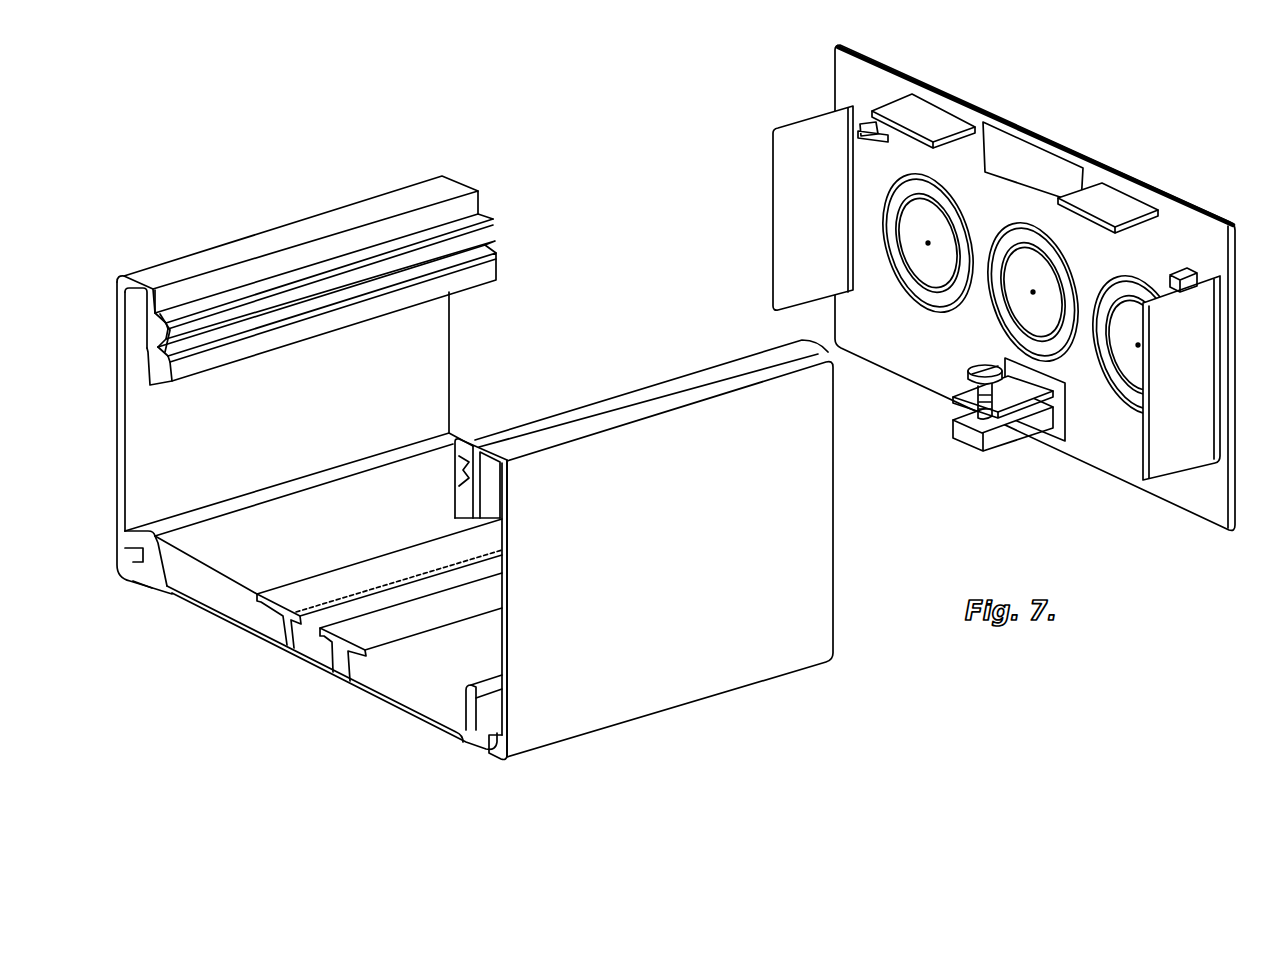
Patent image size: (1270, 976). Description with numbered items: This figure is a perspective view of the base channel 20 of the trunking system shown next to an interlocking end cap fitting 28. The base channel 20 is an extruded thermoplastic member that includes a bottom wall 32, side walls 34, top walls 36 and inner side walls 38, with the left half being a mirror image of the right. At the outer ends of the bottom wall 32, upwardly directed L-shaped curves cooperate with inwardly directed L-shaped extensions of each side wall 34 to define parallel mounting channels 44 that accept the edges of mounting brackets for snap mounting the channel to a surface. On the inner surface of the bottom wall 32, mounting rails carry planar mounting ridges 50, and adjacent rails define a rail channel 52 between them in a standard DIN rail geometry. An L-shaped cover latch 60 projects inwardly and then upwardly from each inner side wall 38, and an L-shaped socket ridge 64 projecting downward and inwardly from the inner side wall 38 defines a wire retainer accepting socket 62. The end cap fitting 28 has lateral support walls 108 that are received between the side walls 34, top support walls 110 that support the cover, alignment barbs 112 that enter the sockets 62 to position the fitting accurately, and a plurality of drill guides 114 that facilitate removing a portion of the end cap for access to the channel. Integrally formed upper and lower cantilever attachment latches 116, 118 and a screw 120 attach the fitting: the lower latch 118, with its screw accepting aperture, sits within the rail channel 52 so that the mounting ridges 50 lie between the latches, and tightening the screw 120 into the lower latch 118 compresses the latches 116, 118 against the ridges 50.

The base channel 20 is at (270, 222).
The end cap fitting 28 is at (932, 87).
The bottom wall 32 is at (218, 625).
The side walls 34 is at (117, 448).
The top walls 36 is at (385, 200).
The inner side walls 38 is at (143, 318).
The mounting channels 44 is at (483, 727).
The mounting ridge 50 is at (363, 650).
The rail channel 52 is at (317, 648).
The cover latch 60 is at (492, 220).
The wire retainer accepting socket 62 is at (491, 268).
The socket ridge 64 is at (490, 282).
The lateral support walls 108 is at (820, 123).
The top support walls 110 is at (950, 122).
The alignment barbs 112 is at (867, 130).
The drill guides 114 is at (997, 312).
The upper cantilever attachment latch 116 is at (1027, 400).
The lower cantilever attachment latch 118 is at (1003, 448).
The screw 120 is at (965, 410).